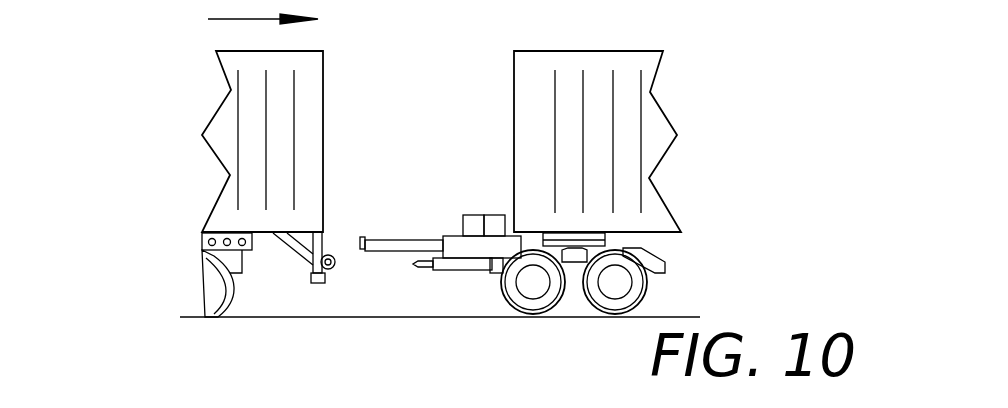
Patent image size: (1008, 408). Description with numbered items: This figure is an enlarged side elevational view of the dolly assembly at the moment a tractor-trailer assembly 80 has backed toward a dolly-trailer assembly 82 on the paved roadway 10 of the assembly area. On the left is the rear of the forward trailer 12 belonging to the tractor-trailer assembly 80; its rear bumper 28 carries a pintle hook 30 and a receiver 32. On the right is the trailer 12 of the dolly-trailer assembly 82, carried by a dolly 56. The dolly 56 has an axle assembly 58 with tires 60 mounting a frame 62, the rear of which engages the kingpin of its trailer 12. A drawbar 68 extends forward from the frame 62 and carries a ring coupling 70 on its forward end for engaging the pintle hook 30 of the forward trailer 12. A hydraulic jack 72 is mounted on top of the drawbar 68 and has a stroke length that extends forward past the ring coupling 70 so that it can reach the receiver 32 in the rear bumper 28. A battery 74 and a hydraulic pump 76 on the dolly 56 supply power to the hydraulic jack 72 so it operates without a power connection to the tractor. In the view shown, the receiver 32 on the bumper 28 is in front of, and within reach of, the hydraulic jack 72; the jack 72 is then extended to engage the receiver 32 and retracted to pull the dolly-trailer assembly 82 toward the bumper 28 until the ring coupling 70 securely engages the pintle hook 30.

The roadway 10 is at (232, 318).
The trailer 12 is at (358, 83).
The rear bumper 28 is at (318, 282).
The pintle hook 30 is at (332, 269).
The receiver 32 is at (325, 242).
The dolly 56 is at (695, 274).
The axle assembly 58 is at (615, 285).
The tire 60 is at (642, 290).
The frame 62 is at (495, 275).
The drawbar 68 is at (460, 272).
The ring coupling 70 is at (428, 268).
The hydraulic jack 72 is at (418, 240).
The battery 74 is at (470, 215).
The hydraulic pump 76 is at (497, 215).
The tractor-trailer assembly 80 is at (140, 74).
The dolly-trailer assembly 82 is at (768, 114).